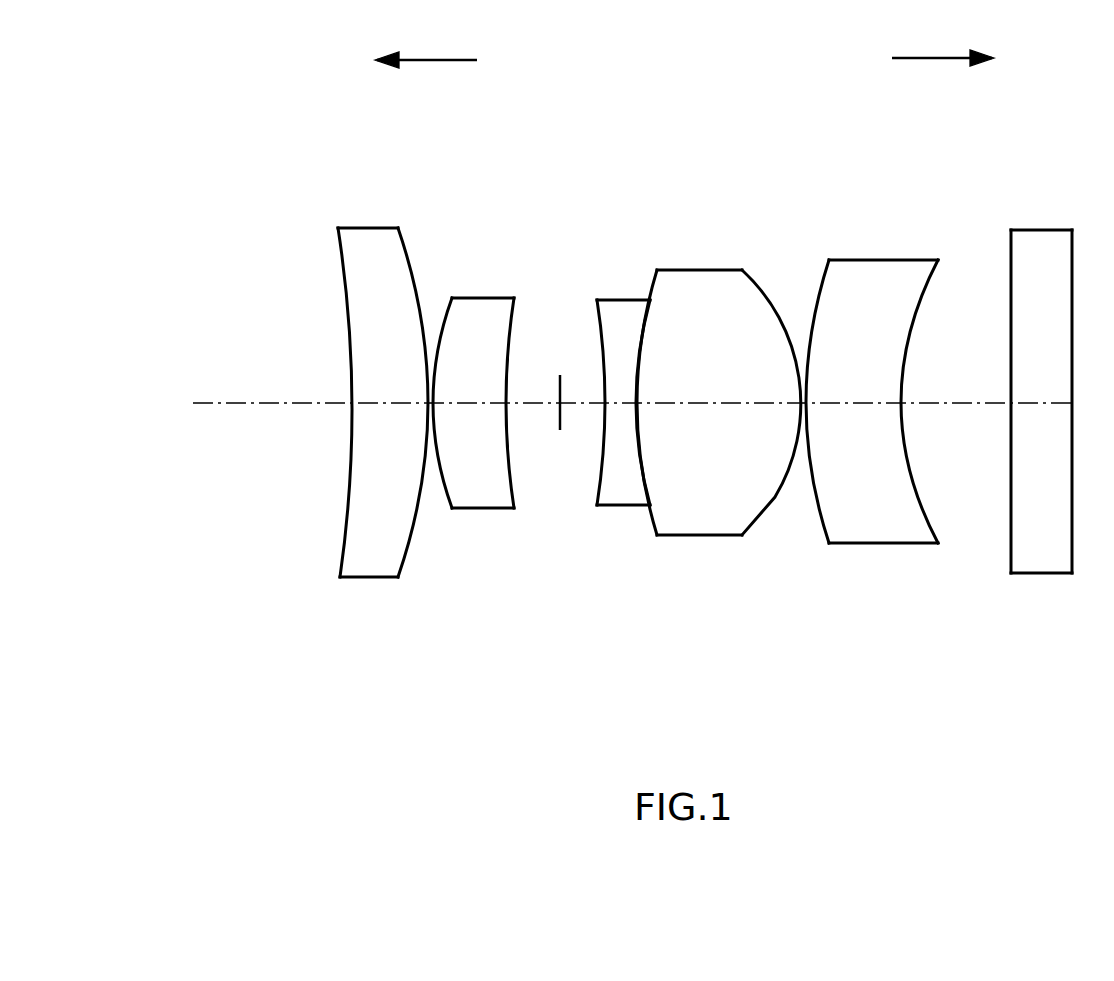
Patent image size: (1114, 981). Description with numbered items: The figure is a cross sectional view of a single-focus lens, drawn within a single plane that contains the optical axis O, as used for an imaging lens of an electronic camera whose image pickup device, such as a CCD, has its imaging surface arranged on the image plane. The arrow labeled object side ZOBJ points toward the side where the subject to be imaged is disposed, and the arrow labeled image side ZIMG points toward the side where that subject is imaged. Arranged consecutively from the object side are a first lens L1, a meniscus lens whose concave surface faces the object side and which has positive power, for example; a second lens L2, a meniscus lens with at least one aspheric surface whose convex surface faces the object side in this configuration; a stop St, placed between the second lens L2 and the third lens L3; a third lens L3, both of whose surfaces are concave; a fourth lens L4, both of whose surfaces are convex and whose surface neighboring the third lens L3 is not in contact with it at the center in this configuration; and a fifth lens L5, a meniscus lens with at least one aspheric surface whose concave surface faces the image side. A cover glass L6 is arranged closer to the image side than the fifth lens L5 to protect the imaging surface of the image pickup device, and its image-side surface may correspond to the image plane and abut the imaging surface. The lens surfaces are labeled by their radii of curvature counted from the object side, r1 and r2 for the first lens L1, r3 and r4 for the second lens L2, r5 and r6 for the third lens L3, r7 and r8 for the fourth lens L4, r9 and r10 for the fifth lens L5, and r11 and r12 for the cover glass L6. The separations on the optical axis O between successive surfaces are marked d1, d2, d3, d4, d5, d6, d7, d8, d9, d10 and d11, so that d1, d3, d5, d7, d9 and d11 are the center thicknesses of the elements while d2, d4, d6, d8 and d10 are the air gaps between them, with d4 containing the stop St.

The first lens L1 is at (370, 434).
The second lens L2 is at (482, 425).
The third lens L3 is at (618, 413).
The fourth lens L4 is at (719, 412).
The fifth lens L5 is at (883, 434).
The cover glass L6 is at (1037, 424).
The stop St is at (560, 430).
The optical axis O is at (218, 405).
The object side ZOBJ is at (428, 58).
The image side ZIMG is at (926, 56).
The radius of curvature of the first lens surface r1 is at (338, 555).
The radius of curvature of the second lens surface r2 is at (405, 552).
The radius of curvature of the third lens surface r3 is at (445, 500).
The radius of curvature of the fourth lens surface r4 is at (525, 478).
The radius of curvature of the fifth lens surface r5 is at (597, 478).
The radius of curvature of the sixth lens surface r6 is at (643, 445).
The radius of curvature of the seventh lens surface r7 is at (652, 425).
The radius of curvature of the eighth lens surface r8 is at (775, 497).
The radius of curvature of the ninth lens surface r9 is at (822, 535).
The radius of curvature of the tenth lens surface r10 is at (938, 515).
The radius of curvature of the eleventh lens surface r11 is at (1005, 545).
The radius of curvature of the twelfth lens surface r12 is at (1075, 545).
The surface separation between the first and second lens surfaces d1 is at (390, 388).
The surface separation between the second and third lens surfaces d2 is at (430, 403).
The surface separation between the third and fourth lens surfaces d3 is at (469, 388).
The surface separation between the fourth and fifth lens surfaces d4 is at (565, 403).
The surface separation between the fifth and sixth lens surfaces d5 is at (618, 403).
The surface separation between the sixth and seventh lens surfaces d6 is at (640, 403).
The surface separation between the seventh and eighth lens surfaces d7 is at (720, 388).
The surface separation between the eighth and ninth lens surfaces d8 is at (803, 403).
The surface separation between the ninth and tenth lens surfaces d9 is at (853, 388).
The surface separation between the tenth and eleventh lens surfaces d10 is at (956, 388).
The surface separation between the eleventh and twelfth lens surfaces d11 is at (1042, 388).